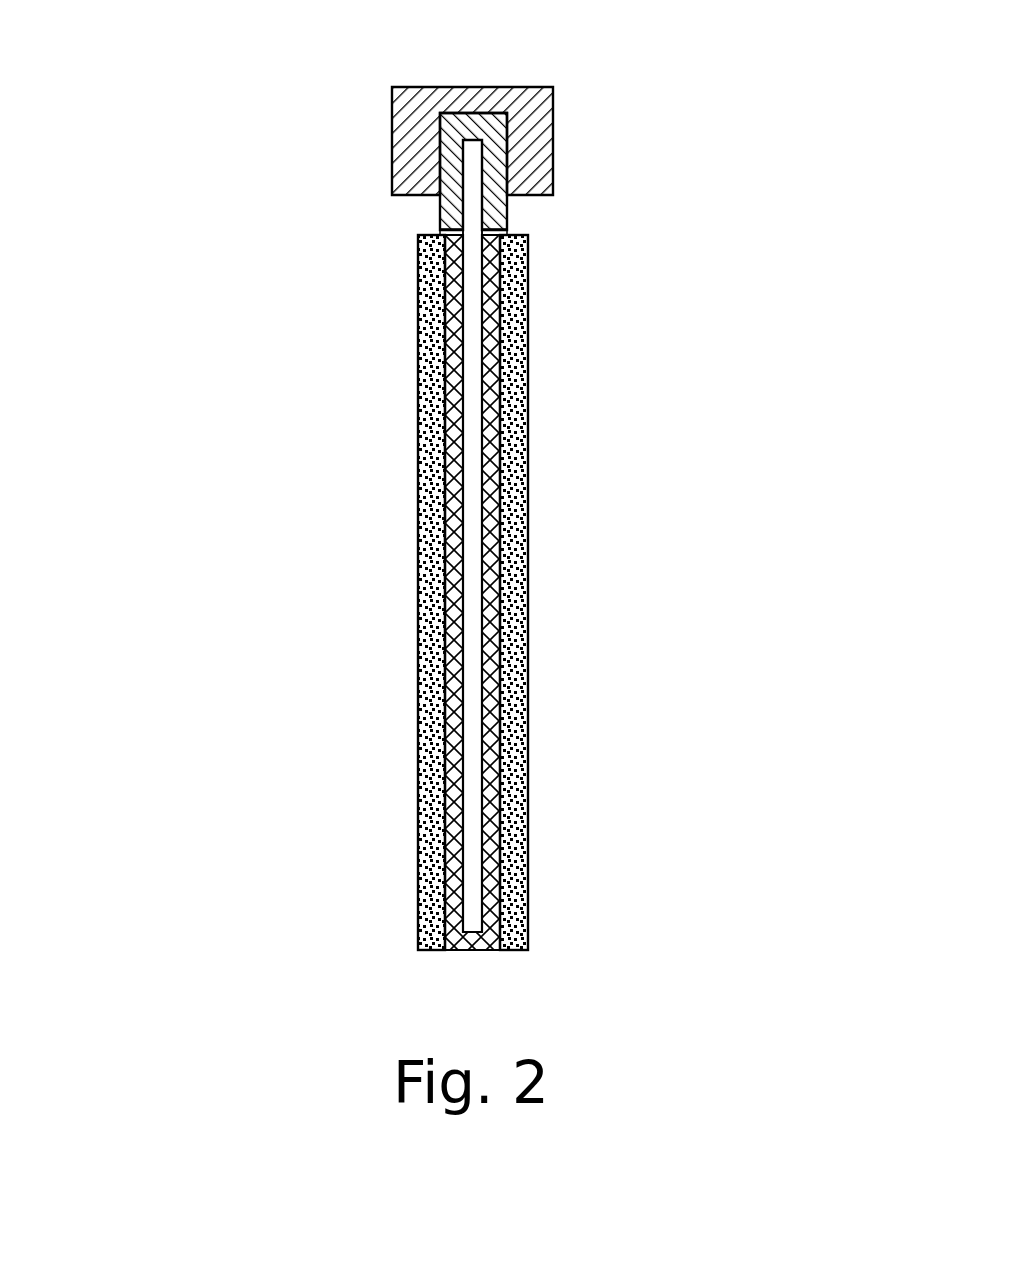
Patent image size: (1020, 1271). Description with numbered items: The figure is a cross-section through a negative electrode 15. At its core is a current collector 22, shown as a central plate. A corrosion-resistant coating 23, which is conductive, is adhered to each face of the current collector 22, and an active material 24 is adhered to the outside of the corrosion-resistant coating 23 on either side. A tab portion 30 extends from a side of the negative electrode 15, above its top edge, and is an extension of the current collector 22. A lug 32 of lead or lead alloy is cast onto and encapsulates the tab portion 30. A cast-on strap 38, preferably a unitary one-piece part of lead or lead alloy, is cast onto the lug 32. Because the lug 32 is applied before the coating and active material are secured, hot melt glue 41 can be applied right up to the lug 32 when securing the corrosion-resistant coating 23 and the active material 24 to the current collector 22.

The negative electrode 15 is at (203, 245).
The cast-on strap 38 is at (437, 108).
The lug 32 is at (508, 163).
The tab portion 30 is at (474, 207).
The hot melt glue 41 is at (447, 230).
The active material 24 is at (430, 511).
The corrosion-resistant coating 23 is at (448, 590).
The current collector 22 is at (473, 854).